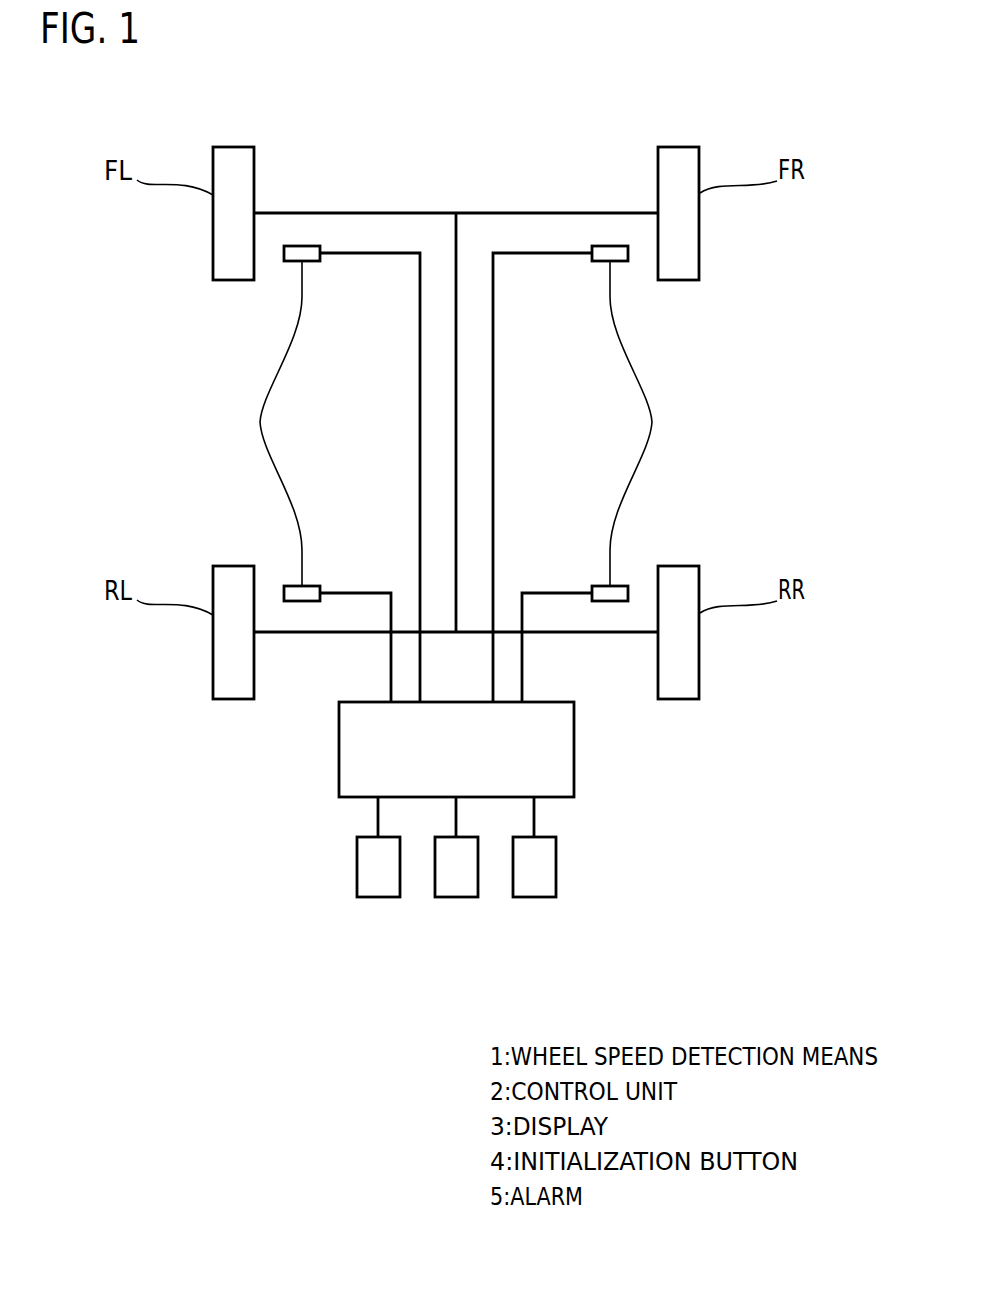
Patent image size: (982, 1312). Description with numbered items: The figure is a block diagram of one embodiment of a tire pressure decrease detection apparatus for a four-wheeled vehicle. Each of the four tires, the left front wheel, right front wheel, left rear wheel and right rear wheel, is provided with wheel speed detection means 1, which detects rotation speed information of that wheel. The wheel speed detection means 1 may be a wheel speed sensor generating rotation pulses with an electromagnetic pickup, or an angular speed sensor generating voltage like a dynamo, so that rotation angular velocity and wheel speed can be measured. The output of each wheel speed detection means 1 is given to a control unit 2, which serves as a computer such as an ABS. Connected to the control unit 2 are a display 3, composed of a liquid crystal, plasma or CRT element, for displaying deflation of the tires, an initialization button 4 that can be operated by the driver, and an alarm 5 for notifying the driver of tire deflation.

The wheel speed detection means 1 is at (456, 474).
The control unit 2 is at (574, 752).
The display 3 is at (379, 897).
The initialization button 4 is at (457, 897).
The alarm 5 is at (535, 897).